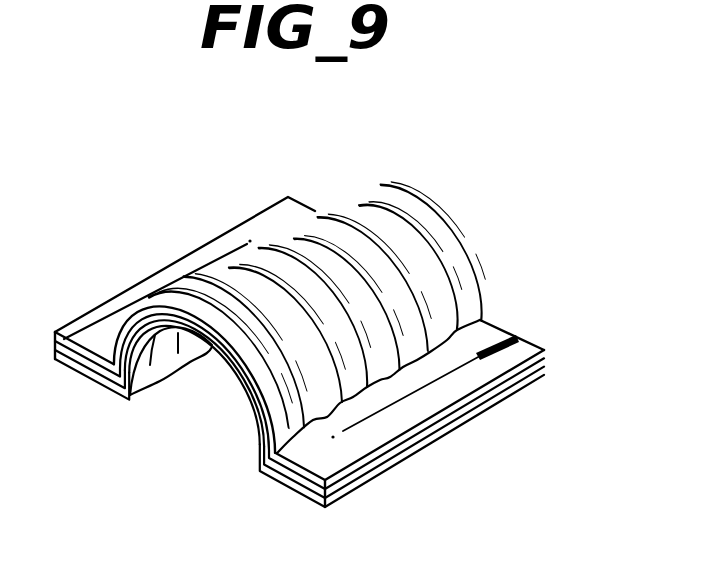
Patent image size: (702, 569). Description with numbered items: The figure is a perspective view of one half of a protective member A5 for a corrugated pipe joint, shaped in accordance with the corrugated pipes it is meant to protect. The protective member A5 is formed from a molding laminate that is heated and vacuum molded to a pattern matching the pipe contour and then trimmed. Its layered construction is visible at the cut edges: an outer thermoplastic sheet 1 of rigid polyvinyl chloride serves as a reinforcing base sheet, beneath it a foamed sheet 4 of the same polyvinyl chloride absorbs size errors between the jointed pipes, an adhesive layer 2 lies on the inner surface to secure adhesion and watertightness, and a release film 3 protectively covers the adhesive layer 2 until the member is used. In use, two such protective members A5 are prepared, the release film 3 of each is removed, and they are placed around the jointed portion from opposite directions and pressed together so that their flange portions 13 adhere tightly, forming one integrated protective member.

The protective member A5 is at (473, 240).
The thermoplastic sheet 1 is at (546, 350).
The foamed sheet 4 is at (547, 357).
The adhesive layer 2 is at (547, 363).
The release film 3 is at (547, 374).
The flange portion 13 is at (374, 432).